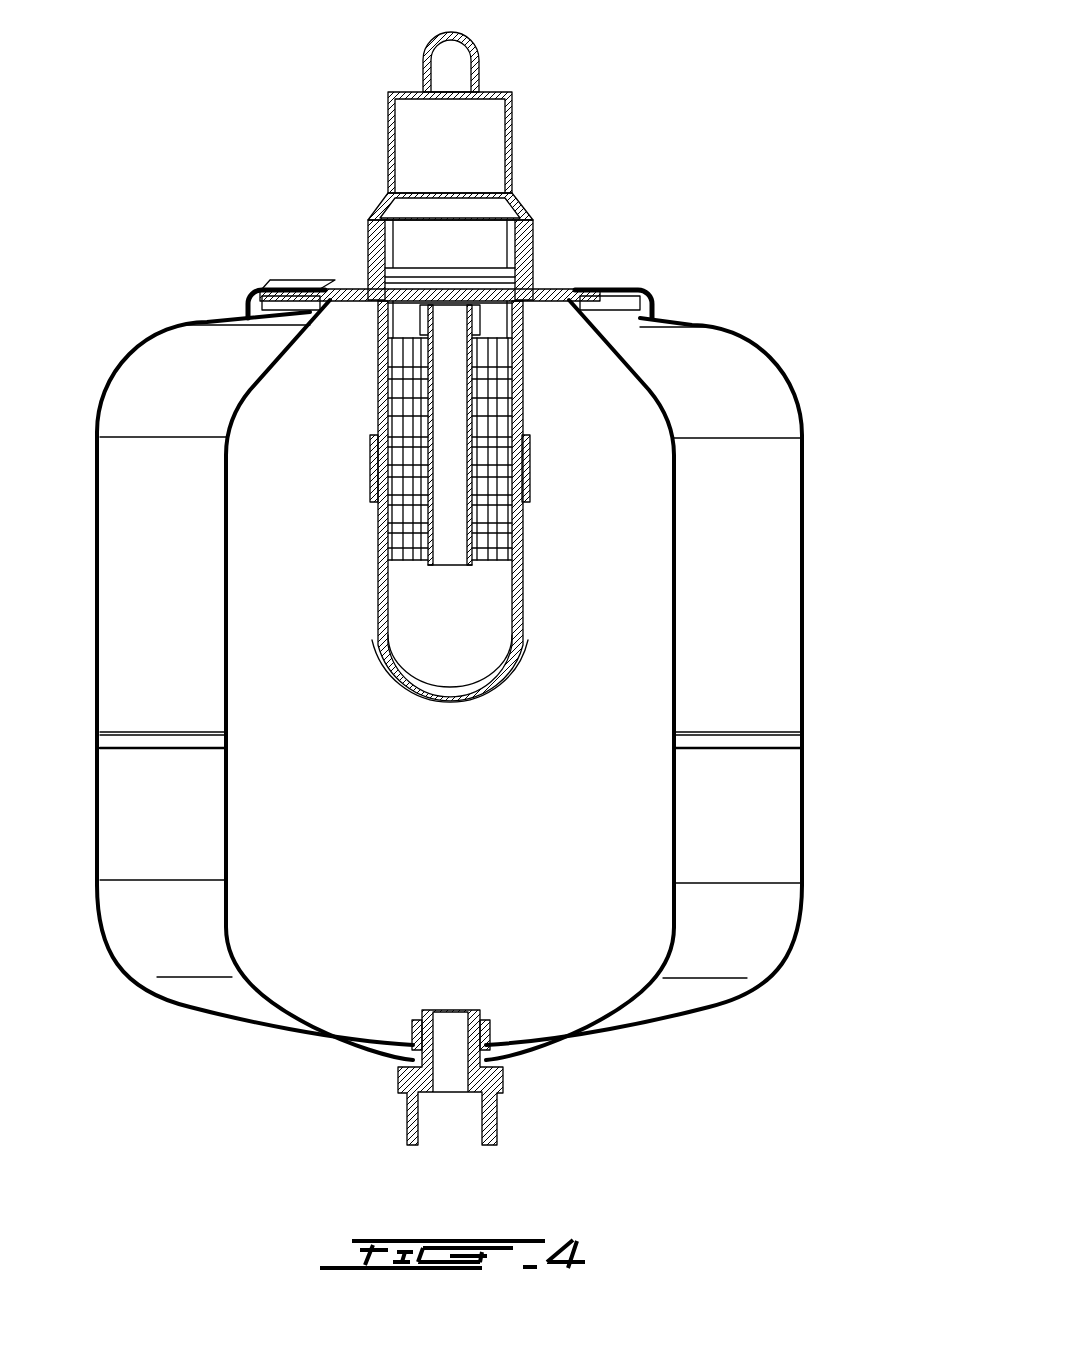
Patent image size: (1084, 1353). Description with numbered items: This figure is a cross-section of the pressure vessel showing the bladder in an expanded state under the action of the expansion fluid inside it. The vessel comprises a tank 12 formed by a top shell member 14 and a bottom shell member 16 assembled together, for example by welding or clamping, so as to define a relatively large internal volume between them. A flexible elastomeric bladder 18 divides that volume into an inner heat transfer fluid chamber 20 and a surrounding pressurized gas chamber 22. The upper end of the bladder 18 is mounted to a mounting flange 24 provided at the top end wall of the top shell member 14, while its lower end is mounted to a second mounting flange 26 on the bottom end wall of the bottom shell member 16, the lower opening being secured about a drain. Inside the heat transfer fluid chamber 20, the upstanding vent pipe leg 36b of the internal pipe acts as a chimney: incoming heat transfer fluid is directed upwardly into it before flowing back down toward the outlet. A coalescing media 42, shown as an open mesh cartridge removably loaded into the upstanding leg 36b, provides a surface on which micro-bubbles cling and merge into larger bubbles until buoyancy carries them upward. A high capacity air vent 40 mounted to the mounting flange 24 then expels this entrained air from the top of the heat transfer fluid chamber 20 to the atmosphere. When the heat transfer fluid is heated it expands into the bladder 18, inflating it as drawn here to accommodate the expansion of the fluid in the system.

The tank 12 is at (812, 456).
The top shell member 14 is at (792, 370).
The bottom shell member 16 is at (814, 853).
The bladder 18 is at (678, 907).
The heat transfer fluid chamber 20 is at (617, 955).
The pressurized gas chamber 22 is at (712, 962).
The mounting flange 24 is at (615, 303).
The second mounting flange 26 is at (495, 1030).
The upstanding vent pipe leg 36b is at (375, 397).
The air vent 40 is at (545, 156).
The coalescing media 42 is at (403, 358).